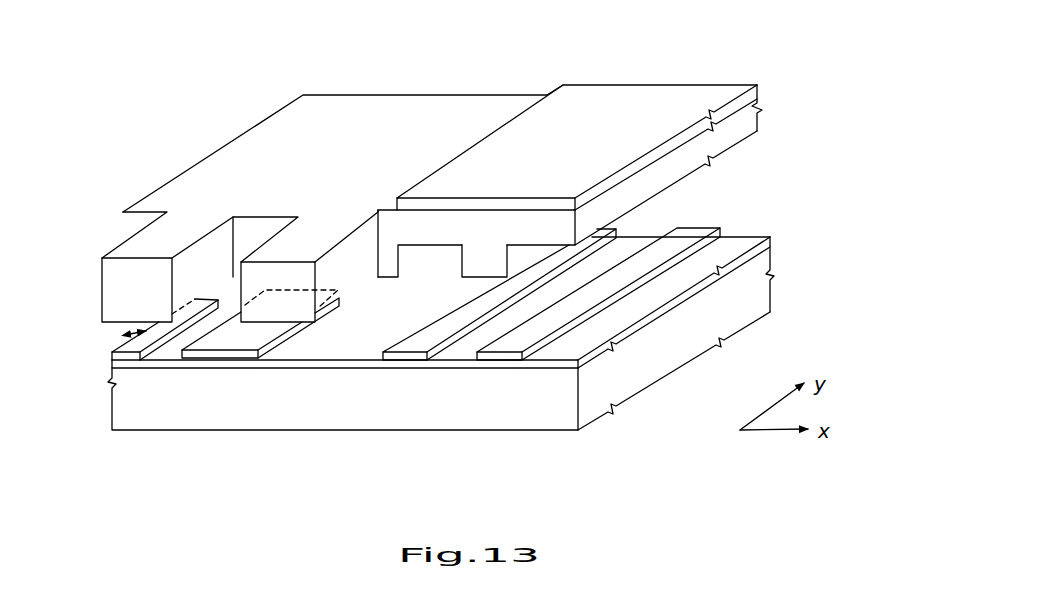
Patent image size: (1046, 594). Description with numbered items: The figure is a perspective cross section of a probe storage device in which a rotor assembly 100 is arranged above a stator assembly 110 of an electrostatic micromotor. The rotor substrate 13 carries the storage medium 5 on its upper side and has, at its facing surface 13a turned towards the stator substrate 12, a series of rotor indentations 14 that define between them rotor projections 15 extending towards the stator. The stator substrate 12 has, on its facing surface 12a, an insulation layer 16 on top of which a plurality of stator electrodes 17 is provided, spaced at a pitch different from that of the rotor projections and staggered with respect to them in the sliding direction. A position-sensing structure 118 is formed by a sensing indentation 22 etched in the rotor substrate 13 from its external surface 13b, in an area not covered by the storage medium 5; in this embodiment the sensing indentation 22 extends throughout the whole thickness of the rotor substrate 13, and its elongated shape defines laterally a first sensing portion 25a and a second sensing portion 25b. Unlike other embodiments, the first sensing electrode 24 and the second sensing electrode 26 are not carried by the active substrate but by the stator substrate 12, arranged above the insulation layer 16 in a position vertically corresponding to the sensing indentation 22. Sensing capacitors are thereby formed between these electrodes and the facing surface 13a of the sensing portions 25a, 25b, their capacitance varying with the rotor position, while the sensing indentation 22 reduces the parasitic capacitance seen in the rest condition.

The storage medium 5 is at (760, 90).
The upper chip assembly 100 is at (806, 95).
The rotor substrate 13 is at (715, 143).
The lower chip assembly 110 is at (750, 217).
The insulation layer 16 is at (762, 253).
The stator substrate 12 is at (753, 300).
The facing surface 12a is at (564, 356).
The stator electrodes 17 is at (498, 353).
The rotor indentations 14 is at (409, 268).
The rotor projections 15 is at (477, 250).
The second sensing portion 25b is at (304, 278).
The first sensing electrode 24 is at (207, 355).
The second sensing electrode 26 is at (130, 362).
The facing surface 13a is at (111, 351).
The first sensing portion 25a is at (115, 327).
The position-sensing structure 118 is at (82, 306).
The external surface 13b is at (114, 252).
The sensing indentation 22 is at (125, 230).